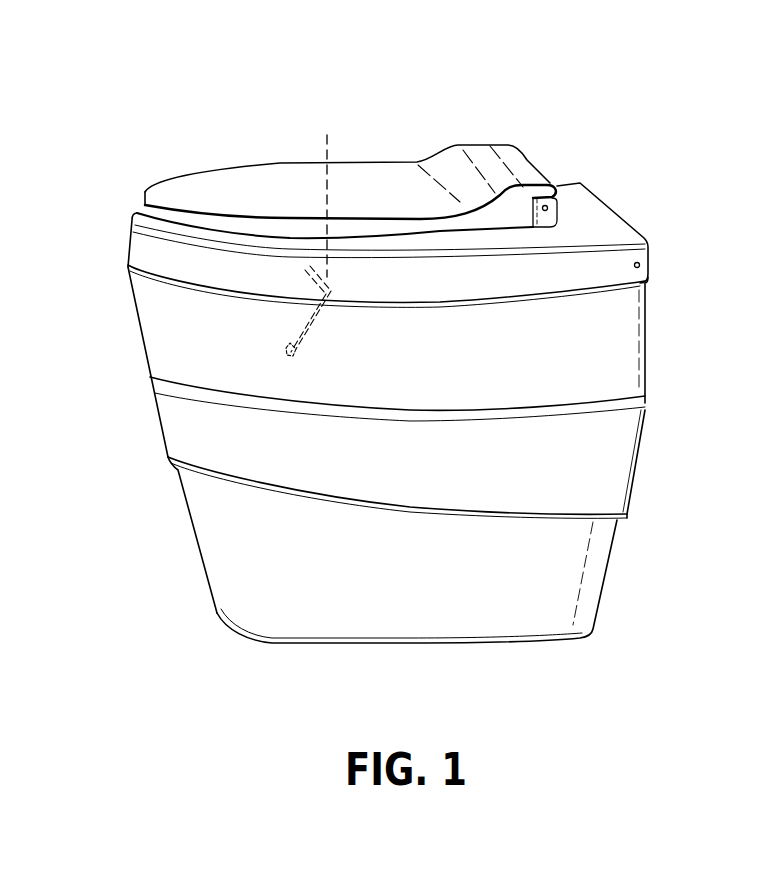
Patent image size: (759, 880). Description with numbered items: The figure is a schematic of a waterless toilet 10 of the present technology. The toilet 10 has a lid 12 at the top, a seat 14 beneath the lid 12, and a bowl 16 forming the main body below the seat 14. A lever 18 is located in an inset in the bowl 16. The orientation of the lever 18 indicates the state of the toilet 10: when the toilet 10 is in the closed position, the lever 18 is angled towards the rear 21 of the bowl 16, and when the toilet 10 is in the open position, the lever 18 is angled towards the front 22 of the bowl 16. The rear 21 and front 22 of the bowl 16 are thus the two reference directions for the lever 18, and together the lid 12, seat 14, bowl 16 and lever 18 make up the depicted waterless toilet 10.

The waterless toilet 10 is at (233, 108).
The lid 12 is at (497, 157).
The seat 14 is at (137, 252).
The bowl 16 is at (283, 618).
The lever 18 is at (314, 231).
The rear 21 is at (650, 330).
The front 22 is at (162, 372).